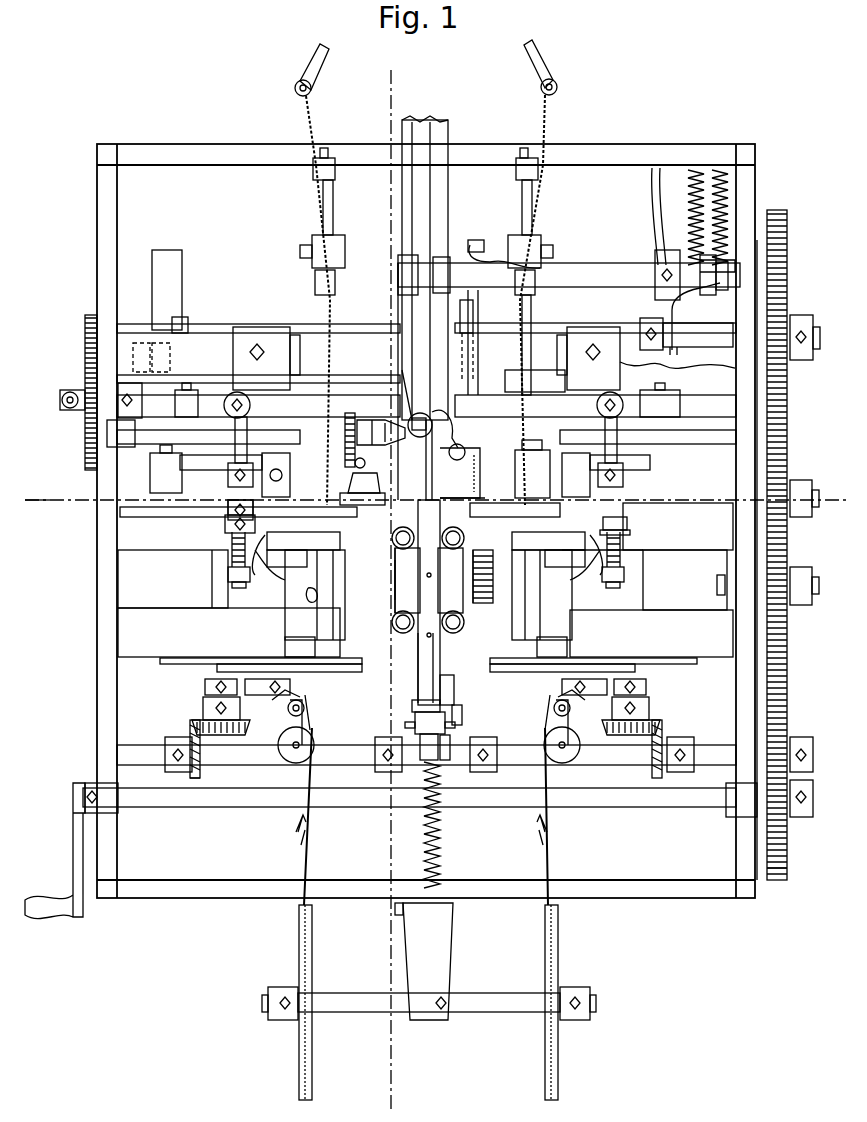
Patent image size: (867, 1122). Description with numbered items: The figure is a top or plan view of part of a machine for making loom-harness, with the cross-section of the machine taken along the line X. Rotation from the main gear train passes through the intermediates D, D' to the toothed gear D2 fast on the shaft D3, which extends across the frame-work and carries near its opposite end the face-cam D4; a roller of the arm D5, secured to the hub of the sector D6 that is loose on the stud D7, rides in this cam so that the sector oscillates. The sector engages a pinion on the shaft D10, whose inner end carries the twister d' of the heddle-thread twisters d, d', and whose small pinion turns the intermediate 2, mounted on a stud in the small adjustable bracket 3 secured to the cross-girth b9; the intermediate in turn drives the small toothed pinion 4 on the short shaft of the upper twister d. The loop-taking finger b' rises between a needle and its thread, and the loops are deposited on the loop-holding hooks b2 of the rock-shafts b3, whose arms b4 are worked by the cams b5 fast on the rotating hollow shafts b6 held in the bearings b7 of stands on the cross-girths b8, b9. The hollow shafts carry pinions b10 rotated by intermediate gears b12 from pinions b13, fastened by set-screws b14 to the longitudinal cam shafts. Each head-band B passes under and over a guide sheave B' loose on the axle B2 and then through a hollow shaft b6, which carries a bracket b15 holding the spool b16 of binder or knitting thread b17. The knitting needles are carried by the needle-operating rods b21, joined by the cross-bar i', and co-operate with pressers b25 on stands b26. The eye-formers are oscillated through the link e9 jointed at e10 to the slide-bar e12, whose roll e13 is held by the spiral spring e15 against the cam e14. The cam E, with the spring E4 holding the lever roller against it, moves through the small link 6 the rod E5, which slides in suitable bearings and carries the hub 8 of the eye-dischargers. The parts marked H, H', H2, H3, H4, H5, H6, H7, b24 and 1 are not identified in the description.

The main frame H is at (413, 521).
The frame cross bar H' is at (420, 783).
The frame bearing block H2 is at (787, 830).
The frame bearing H3 is at (787, 868).
The frame spring support H4 is at (675, 467).
The brush holder bottom H5 is at (200, 776).
The brush H6 is at (676, 765).
The bearing block H7 is at (215, 580).
The intermediate gear D is at (810, 589).
The intermediate gear D' is at (812, 503).
The toothed gear D2 is at (787, 392).
The shaft D3 is at (225, 330).
The face-cam D4 is at (167, 279).
The arm D5 is at (130, 375).
The sector D6 is at (85, 345).
The stud D7 is at (96, 437).
The shaft D10 is at (165, 445).
The cross-bar i' is at (426, 272).
The loop-taking finger b' is at (569, 308).
The loop-holding hook b2 is at (280, 410).
The rock-shaft b3 is at (275, 445).
The arm b4 is at (230, 525).
The cam b5 is at (340, 512).
The rotating hollow shaft b6 is at (330, 585).
The bearing b7 is at (537, 650).
The cross-girth b8 is at (425, 632).
The cross-girth b9 is at (678, 526).
The pinion b10 is at (348, 676).
The intermediate gear b12 is at (431, 691).
The pinion b13 is at (170, 672).
The set-screw b14 is at (205, 687).
The bracket b15 is at (438, 738).
The spool b16 is at (429, 741).
The binder or knitting thread b17 is at (445, 707).
The needle-operating rod b21 is at (398, 275).
The block b24 is at (240, 365).
The presser b25 is at (528, 350).
The stand b26 is at (605, 385).
The heddle-thread twister d is at (413, 390).
The heddle-thread twister d' is at (421, 562).
The link e9 is at (454, 435).
The joint e10 is at (460, 473).
The slide-bar e12 is at (473, 575).
The roll e13 is at (443, 688).
The cam e14 is at (453, 760).
The spiral spring e15 is at (462, 488).
The cam E is at (400, 780).
The spring E4 is at (495, 845).
The rod E5 is at (418, 680).
The head-band B is at (430, 816).
The guide sheave B' is at (428, 1002).
The axle or stud B2 is at (495, 1003).
The section line x' X is at (37, 498).
The part 1 is at (403, 580).
The intermediate gear 2 is at (368, 445).
The bracket 3 is at (365, 478).
The small toothed pinion 4 is at (350, 420).
The link 6 is at (454, 714).
The hub 8 is at (428, 571).